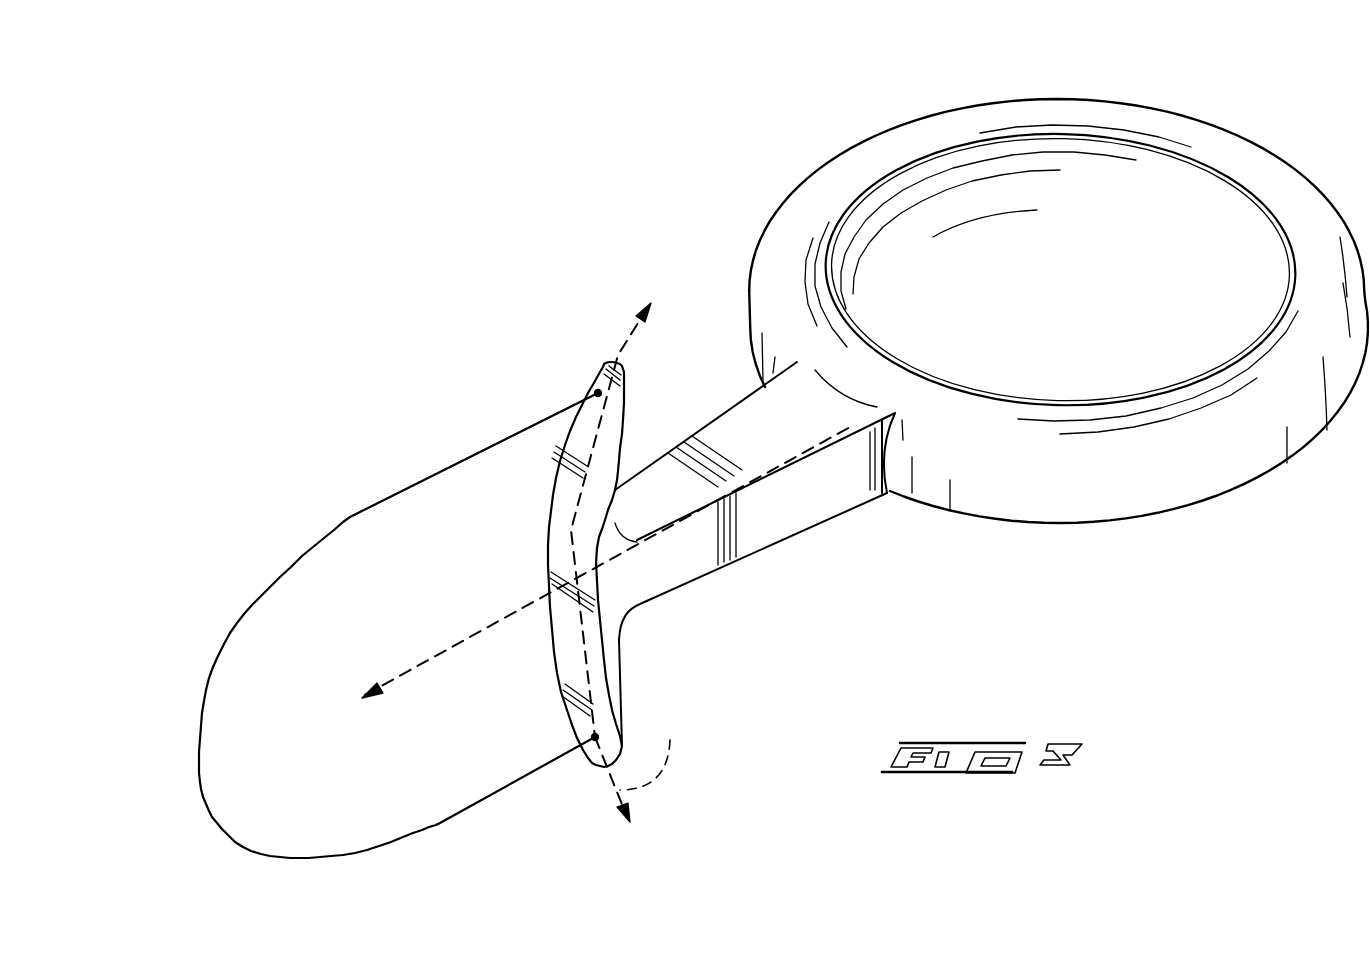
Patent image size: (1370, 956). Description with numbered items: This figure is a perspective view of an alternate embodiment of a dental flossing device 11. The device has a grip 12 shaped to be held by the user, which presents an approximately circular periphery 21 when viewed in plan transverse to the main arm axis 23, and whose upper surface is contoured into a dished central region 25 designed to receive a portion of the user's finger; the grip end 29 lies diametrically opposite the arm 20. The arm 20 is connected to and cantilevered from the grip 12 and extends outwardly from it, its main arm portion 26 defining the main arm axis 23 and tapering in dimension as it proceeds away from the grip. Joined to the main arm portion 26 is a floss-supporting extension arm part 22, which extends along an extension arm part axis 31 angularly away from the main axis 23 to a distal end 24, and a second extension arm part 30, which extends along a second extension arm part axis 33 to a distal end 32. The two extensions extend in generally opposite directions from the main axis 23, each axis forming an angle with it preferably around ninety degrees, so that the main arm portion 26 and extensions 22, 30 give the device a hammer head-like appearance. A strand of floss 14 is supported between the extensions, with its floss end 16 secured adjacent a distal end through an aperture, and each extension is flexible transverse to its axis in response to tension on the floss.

The flossing device 11 is at (752, 141).
The grip 12 is at (1058, 278).
The strand of floss 14 is at (350, 519).
The floss end 16 is at (596, 392).
The arm 20 is at (755, 554).
The circular periphery 21 is at (1003, 103).
The extension arm part 22 is at (537, 530).
The main arm axis 23 is at (432, 655).
The distal end 24 is at (598, 375).
The dished central region 25 is at (1058, 296).
The main arm portion 26 is at (797, 518).
The grip end 29 is at (1235, 130).
The second extension arm part 30 is at (588, 713).
The extension arm part axis 31 is at (630, 340).
The distal end 32 is at (585, 755).
The second extension arm part axis 33 is at (652, 748).